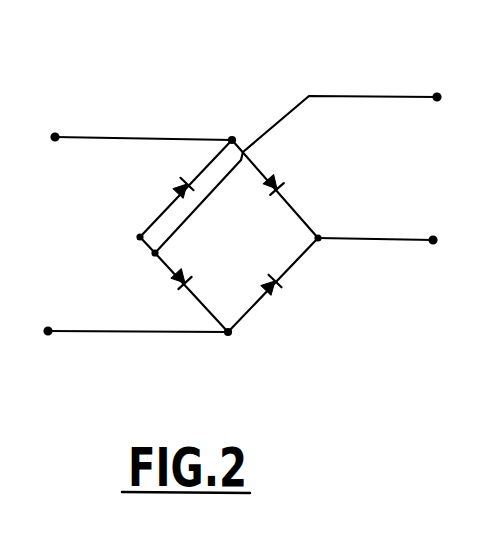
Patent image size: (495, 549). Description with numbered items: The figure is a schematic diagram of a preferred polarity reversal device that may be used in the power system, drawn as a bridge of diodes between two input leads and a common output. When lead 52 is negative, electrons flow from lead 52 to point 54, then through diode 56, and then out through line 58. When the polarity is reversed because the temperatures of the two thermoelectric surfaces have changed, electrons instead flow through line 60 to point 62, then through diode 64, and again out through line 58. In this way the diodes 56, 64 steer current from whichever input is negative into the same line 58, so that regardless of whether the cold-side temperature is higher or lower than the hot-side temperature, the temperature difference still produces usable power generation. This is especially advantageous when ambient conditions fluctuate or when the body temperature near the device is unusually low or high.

The lead 52 is at (149, 137).
The point 54 is at (233, 140).
The diode 56 is at (284, 182).
The line 58 is at (408, 239).
The line 60 is at (143, 334).
The point 62 is at (229, 333).
The diode 64 is at (279, 295).